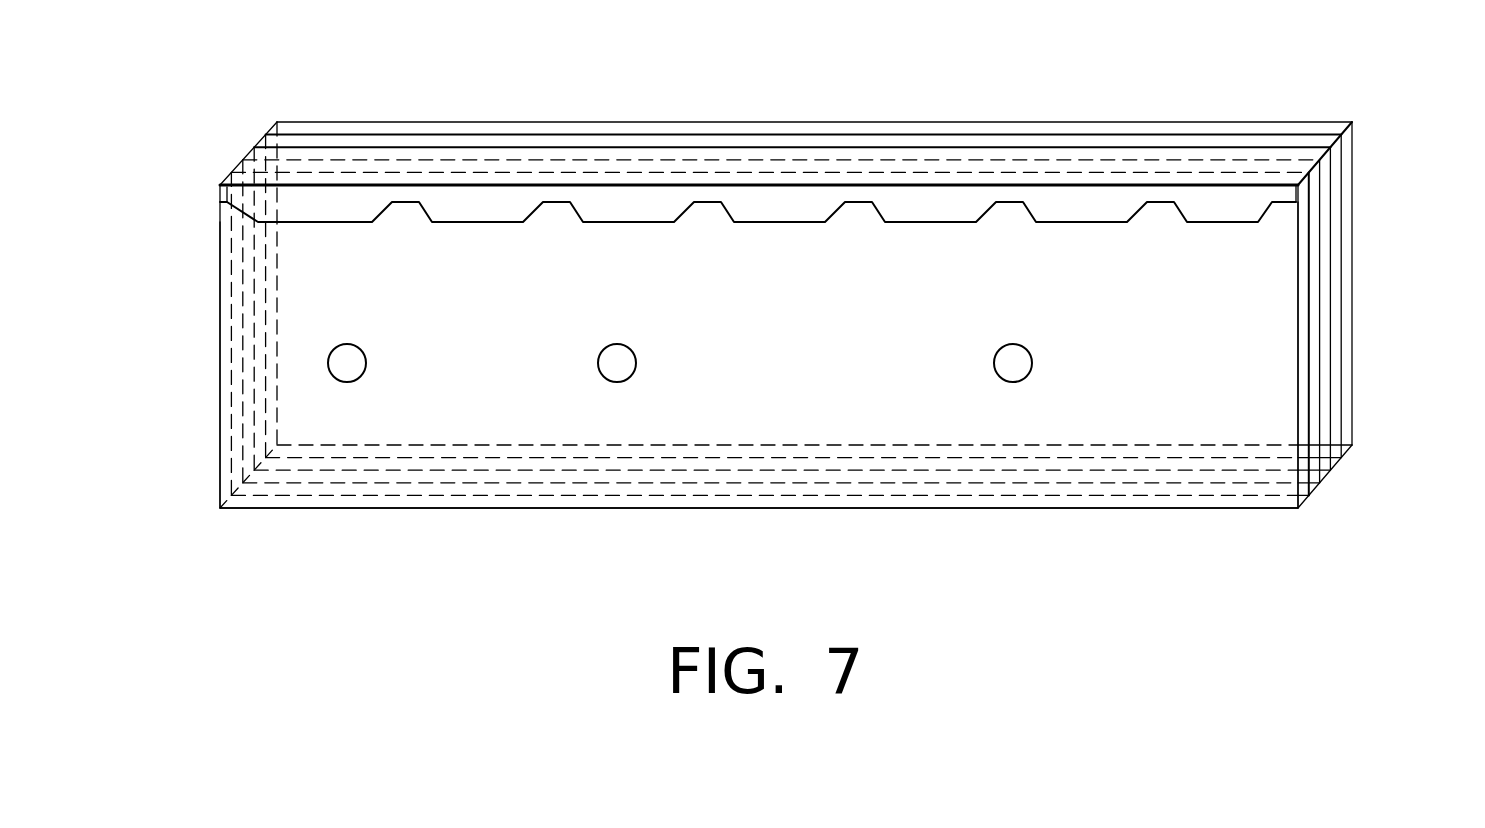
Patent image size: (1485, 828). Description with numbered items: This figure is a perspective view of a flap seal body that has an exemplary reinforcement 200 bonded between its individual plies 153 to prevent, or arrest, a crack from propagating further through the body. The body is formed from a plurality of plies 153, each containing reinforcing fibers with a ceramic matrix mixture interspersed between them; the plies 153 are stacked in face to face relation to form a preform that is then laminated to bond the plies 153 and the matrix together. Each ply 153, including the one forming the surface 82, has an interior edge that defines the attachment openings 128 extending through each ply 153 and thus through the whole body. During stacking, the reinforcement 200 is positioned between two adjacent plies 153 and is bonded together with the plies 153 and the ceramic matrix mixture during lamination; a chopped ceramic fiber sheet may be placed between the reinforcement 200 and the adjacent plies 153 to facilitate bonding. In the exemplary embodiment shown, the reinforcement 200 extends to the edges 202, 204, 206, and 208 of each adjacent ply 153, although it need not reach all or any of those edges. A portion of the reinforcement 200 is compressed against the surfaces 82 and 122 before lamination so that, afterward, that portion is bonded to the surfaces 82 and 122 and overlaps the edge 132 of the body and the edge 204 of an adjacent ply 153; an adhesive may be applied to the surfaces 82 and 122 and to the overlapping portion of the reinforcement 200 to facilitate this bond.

The surface 122 is at (326, 128).
The edge 132 is at (487, 185).
The edge 204 is at (641, 160).
The reinforcement 200 is at (317, 207).
The plies 153 is at (1337, 165).
The edge 202 is at (1318, 265).
The attachment openings 128 is at (585, 350).
The surface 82 is at (856, 354).
The edge 206 is at (253, 367).
The edge 208 is at (504, 483).